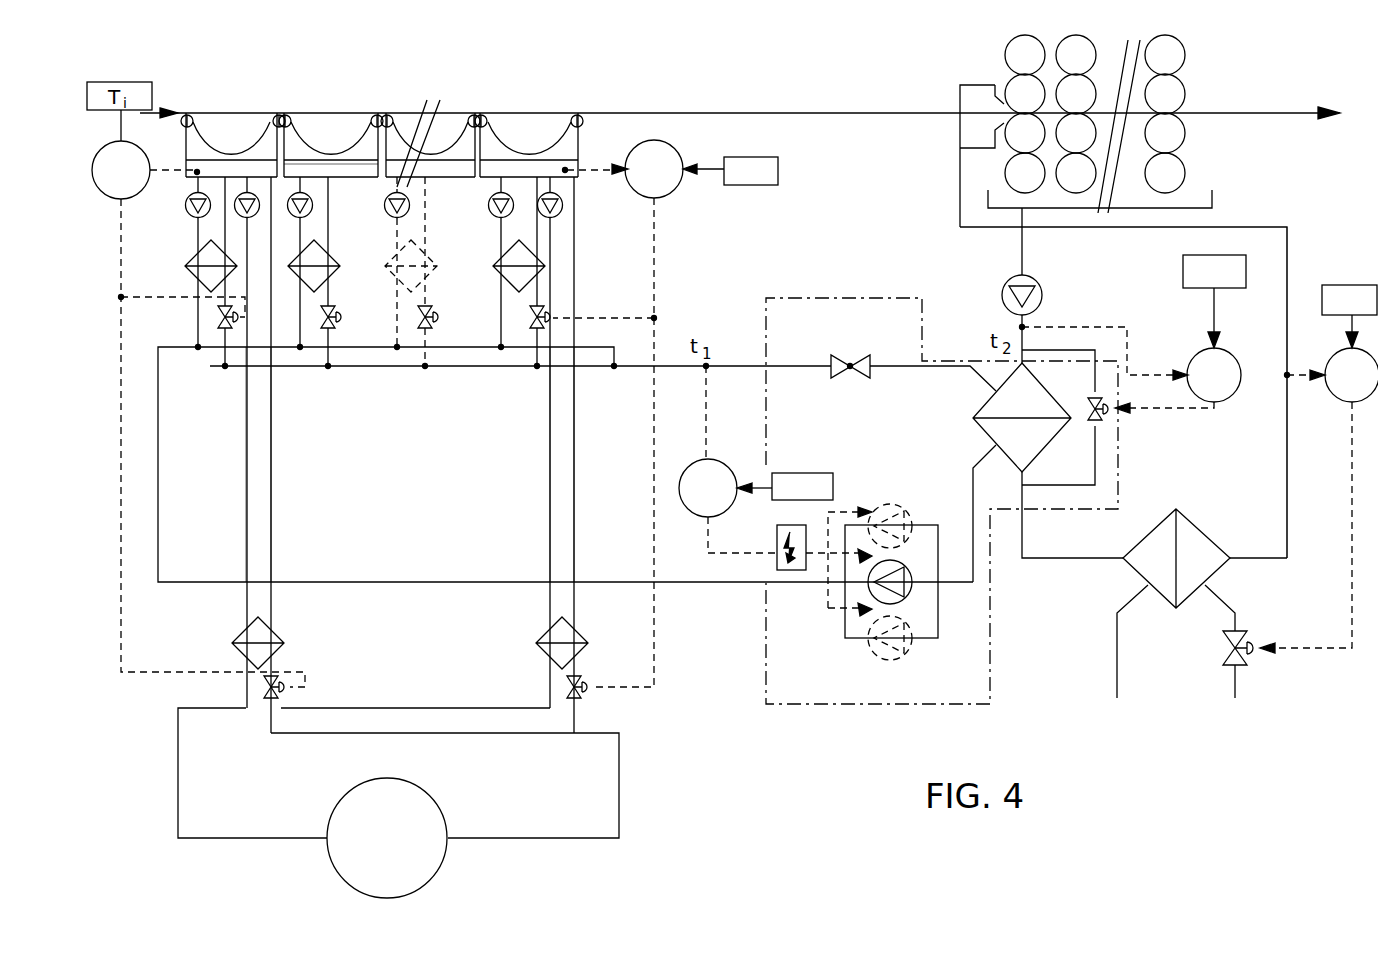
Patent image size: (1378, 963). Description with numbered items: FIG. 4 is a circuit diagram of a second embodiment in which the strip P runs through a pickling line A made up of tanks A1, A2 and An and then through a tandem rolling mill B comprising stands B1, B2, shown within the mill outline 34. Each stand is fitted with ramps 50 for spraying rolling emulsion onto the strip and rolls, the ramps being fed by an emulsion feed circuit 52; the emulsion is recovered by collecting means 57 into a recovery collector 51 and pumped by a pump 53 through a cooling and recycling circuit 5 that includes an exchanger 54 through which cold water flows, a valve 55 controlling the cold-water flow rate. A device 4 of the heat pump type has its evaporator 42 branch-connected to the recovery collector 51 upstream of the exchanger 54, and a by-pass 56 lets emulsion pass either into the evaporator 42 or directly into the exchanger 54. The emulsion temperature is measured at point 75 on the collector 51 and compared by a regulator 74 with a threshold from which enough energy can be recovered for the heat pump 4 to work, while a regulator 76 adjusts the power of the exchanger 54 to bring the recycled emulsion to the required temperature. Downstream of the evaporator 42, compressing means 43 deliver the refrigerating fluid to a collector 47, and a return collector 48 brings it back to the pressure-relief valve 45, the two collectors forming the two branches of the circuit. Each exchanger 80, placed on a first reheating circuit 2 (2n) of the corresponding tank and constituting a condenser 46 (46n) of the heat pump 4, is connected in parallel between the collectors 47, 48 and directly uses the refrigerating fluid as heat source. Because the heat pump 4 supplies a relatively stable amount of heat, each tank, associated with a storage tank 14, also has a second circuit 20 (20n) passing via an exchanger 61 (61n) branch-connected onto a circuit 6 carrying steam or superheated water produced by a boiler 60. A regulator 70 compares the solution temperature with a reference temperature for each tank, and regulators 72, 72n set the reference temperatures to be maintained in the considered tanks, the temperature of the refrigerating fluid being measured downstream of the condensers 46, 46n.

The reheating circuit 2 is at (182, 266).
The reheating circuit 2n is at (488, 258).
The heat pump 4 is at (783, 712).
The cooling and recycling circuit 5 is at (1047, 572).
The steam circuit 6 is at (622, 785).
The storage tank 14 is at (358, 172).
The second reheating circuit 20 is at (236, 528).
The second reheating circuit 20n is at (538, 502).
The press section frame 34 is at (1232, 227).
The evaporator 42 is at (980, 430).
The compressor 43 is at (950, 618).
The pressure-relief valve 45 is at (852, 360).
The condenser 46 is at (195, 290).
The condenser 46n is at (500, 282).
The collector 47 is at (158, 430).
The return collector 48 is at (388, 368).
The spray ramps 50 is at (975, 85).
The recovery collector 51 is at (1022, 258).
The emulsion feed circuit 52 is at (1287, 255).
The pump 53 is at (1002, 293).
The exchanger 54 is at (1205, 530).
The valve 55 is at (1247, 634).
The by-pass 56 is at (1117, 650).
The emulsion recovery means 57 is at (988, 200).
The boiler 60 is at (458, 868).
The exchanger 61 is at (283, 638).
The exchanger 61n is at (585, 638).
The regulator 70 is at (722, 460).
The regulator 72 is at (106, 200).
The nth temperature controller 72n is at (680, 195).
The regulator 74 is at (1236, 358).
The measuring point 75 is at (1048, 313).
The regulator 76 is at (1340, 403).
The exchanger 80 is at (195, 256).
The pickling line A is at (408, 103).
The pickling tank A1 is at (337, 118).
The pickling tank A2 is at (238, 118).
The pickling tank An is at (537, 118).
The tandem rolling mill B is at (950, 92).
The mill stand B1 is at (1000, 70).
The mill stand B2 is at (1082, 30).
The strip P is at (670, 112).